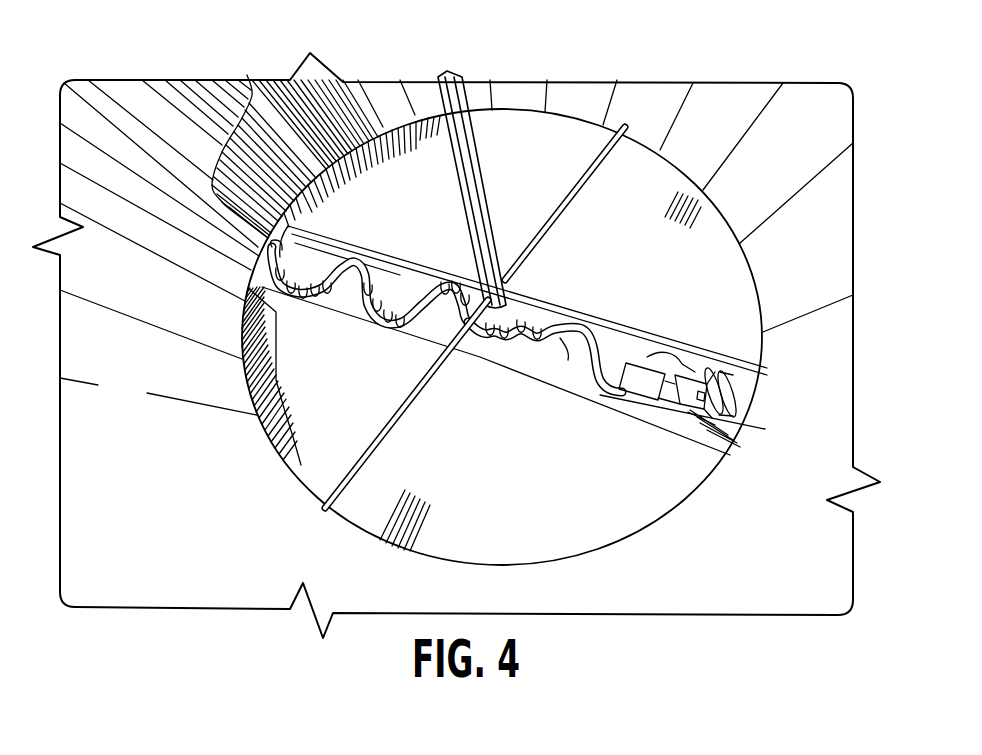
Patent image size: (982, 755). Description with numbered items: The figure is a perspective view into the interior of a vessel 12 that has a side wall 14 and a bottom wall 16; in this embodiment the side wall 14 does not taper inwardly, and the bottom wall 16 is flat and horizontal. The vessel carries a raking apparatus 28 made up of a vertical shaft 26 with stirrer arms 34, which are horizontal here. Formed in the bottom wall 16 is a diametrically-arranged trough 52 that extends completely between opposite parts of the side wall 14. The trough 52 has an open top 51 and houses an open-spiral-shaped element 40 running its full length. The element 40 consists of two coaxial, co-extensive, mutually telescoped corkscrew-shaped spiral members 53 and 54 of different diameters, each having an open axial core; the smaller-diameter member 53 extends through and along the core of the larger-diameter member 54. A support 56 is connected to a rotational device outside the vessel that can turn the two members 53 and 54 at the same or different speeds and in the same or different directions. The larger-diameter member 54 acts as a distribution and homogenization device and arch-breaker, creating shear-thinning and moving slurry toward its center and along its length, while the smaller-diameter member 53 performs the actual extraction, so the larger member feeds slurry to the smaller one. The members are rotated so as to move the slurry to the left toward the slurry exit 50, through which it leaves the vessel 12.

The vessel 12 is at (193, 557).
The side wall 14 is at (127, 125).
The bottom wall 16 is at (612, 226).
The vertical shaft 26 is at (473, 148).
The raking apparatus 28 is at (410, 170).
The stirrer arms 34 is at (543, 220).
The open-spiral-shaped element 40 is at (417, 320).
The slurry exit 50 is at (247, 75).
The open top 51 is at (563, 377).
The trough 52 is at (664, 318).
The smaller-diameter spiral member 53 is at (387, 317).
The larger-diameter spiral member 54 is at (597, 350).
The support 56 is at (740, 397).